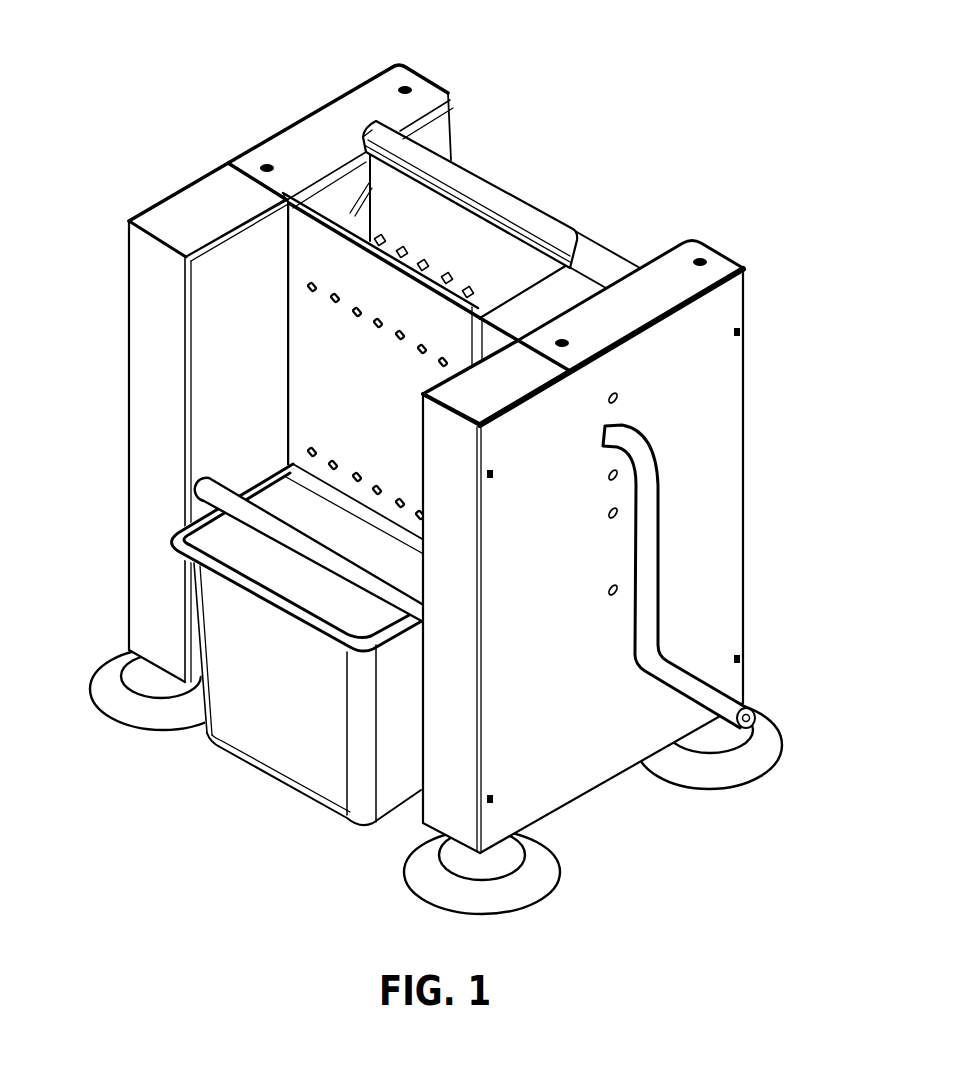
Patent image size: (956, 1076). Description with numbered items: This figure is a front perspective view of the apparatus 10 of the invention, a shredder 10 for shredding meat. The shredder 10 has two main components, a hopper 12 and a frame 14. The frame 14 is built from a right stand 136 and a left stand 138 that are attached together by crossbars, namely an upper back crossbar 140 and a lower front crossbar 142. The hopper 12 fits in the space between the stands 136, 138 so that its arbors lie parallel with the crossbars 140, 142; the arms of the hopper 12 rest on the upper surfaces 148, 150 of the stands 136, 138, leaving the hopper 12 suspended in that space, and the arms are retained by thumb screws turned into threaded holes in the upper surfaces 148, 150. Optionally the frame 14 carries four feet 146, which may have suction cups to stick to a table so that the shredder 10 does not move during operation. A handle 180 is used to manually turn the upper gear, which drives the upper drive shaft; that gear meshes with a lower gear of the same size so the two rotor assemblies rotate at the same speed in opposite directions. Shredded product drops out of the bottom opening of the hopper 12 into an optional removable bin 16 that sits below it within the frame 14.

The apparatus 10 is at (218, 76).
The hopper 12 is at (491, 184).
The frame 14 is at (748, 367).
The removable bin 16 is at (282, 786).
The right stand 136 is at (752, 497).
The left stand 138 is at (127, 393).
The upper back crossbar 140 is at (618, 249).
The lower front crossbar 142 is at (233, 480).
The feet 146 is at (113, 720).
The upper surface 148 is at (510, 388).
The upper surface 150 is at (190, 207).
The handle 180 is at (660, 590).